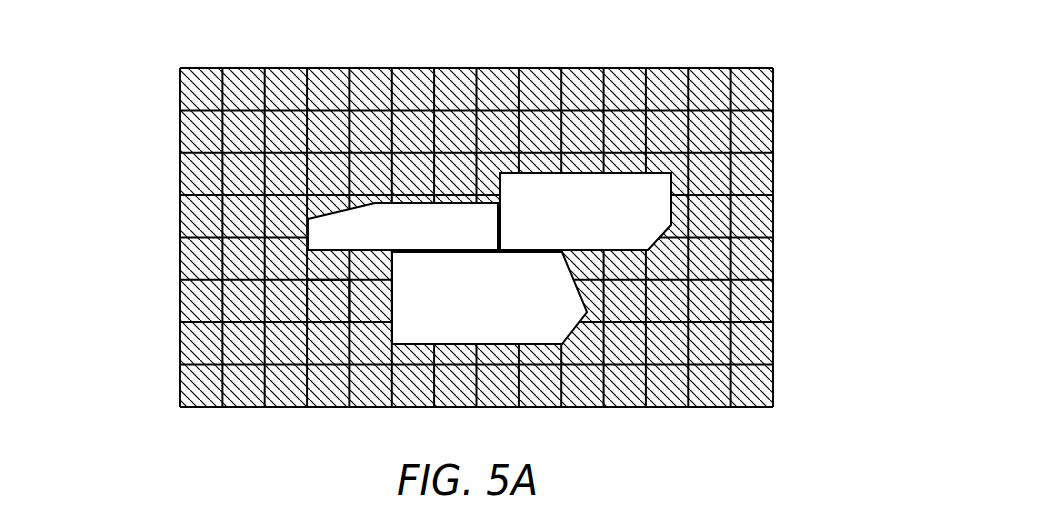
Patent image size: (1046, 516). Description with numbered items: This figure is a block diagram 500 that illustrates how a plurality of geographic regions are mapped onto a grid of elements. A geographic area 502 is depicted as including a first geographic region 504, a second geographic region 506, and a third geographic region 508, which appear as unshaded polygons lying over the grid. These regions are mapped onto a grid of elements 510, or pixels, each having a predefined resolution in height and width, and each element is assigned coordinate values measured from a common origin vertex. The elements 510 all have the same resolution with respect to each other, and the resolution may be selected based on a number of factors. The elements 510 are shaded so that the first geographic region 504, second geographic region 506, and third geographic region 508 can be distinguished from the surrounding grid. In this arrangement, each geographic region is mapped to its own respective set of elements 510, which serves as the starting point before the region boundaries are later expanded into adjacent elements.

The block diagram 500 is at (432, 26).
The geographic area 502 is at (326, 291).
The first geographic region 504 is at (308, 244).
The second geographic region 506 is at (590, 173).
The third geographic region 508 is at (573, 333).
The grid of elements 510 is at (180, 115).